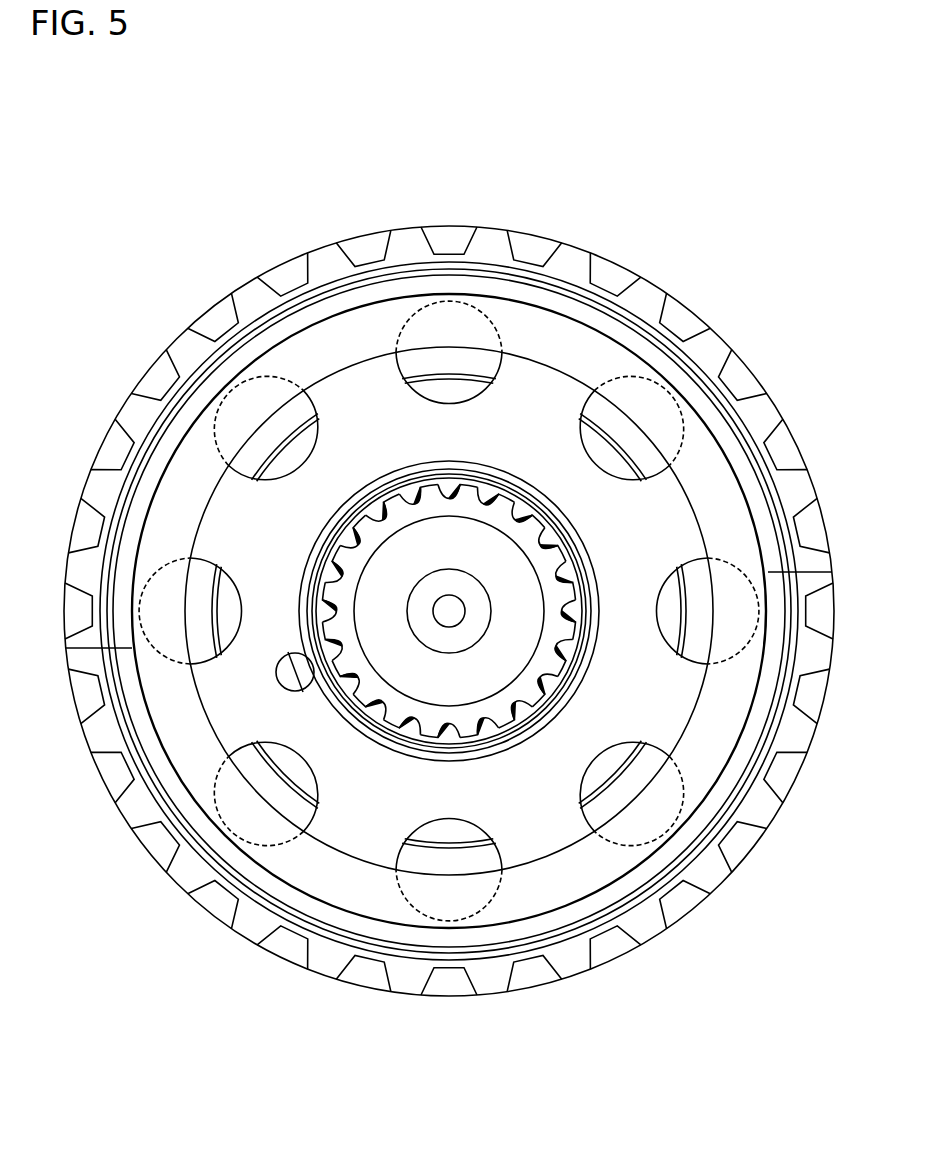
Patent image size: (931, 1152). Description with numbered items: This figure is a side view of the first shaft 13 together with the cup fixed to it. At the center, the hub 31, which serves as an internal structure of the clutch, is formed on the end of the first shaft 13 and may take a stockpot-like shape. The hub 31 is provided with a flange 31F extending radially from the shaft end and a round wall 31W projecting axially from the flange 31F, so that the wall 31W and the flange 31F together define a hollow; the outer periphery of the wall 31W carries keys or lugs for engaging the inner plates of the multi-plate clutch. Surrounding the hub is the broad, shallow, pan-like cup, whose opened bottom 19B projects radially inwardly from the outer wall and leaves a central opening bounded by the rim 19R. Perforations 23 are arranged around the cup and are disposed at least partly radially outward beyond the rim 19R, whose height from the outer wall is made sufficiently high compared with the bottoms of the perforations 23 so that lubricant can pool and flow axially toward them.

The first shaft 13 is at (593, 553).
The perforations 23 is at (458, 396).
The hub 31 is at (465, 94).
The flange 31F is at (338, 397).
The round wall 31W is at (403, 227).
The opened bottom 19B is at (553, 338).
The rim 19R is at (555, 373).